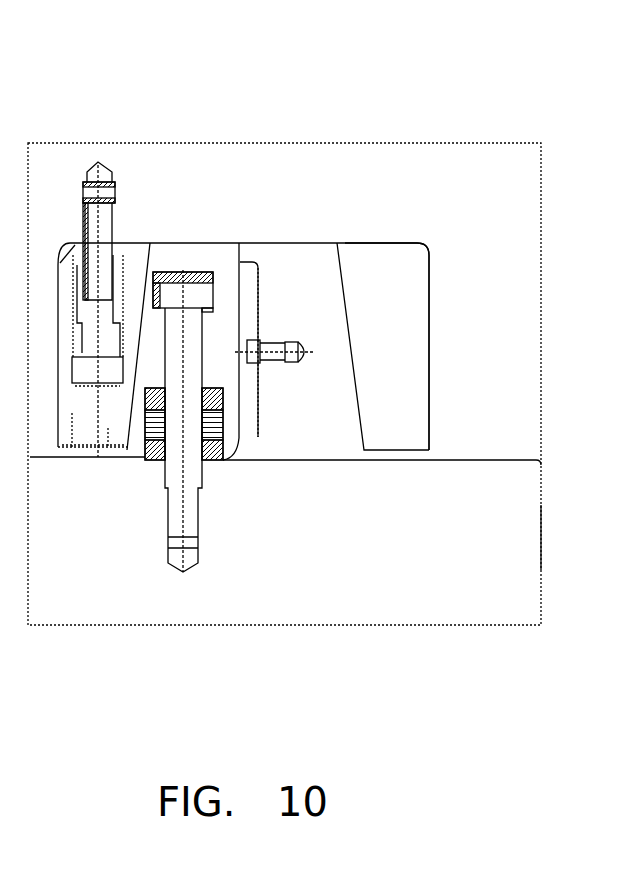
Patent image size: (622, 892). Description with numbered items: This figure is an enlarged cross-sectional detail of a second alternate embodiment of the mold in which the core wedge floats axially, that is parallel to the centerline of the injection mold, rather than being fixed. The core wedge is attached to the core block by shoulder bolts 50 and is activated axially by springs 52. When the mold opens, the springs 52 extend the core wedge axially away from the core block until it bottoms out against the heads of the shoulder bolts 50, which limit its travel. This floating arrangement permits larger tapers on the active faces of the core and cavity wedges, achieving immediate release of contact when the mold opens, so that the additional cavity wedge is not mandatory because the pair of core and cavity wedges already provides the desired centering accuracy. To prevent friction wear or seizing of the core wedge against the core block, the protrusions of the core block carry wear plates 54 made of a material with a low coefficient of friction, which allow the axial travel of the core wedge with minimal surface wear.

The shoulder bolt 50 is at (165, 292).
The spring 52 is at (213, 435).
The wear plate 54 is at (247, 408).